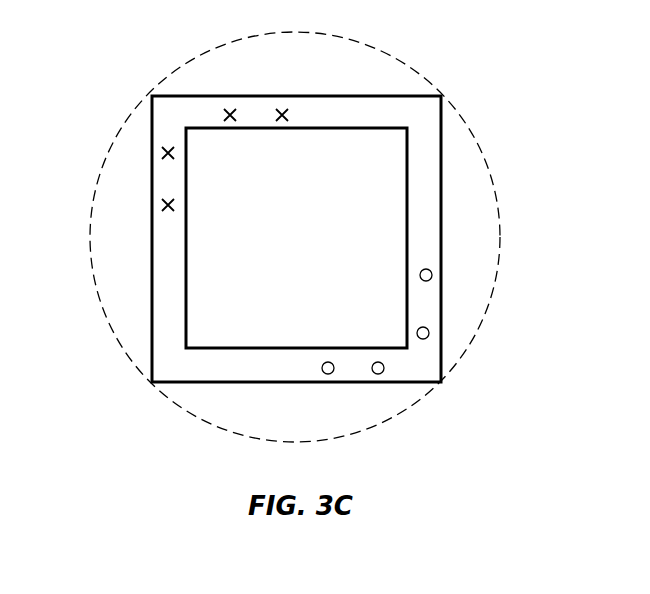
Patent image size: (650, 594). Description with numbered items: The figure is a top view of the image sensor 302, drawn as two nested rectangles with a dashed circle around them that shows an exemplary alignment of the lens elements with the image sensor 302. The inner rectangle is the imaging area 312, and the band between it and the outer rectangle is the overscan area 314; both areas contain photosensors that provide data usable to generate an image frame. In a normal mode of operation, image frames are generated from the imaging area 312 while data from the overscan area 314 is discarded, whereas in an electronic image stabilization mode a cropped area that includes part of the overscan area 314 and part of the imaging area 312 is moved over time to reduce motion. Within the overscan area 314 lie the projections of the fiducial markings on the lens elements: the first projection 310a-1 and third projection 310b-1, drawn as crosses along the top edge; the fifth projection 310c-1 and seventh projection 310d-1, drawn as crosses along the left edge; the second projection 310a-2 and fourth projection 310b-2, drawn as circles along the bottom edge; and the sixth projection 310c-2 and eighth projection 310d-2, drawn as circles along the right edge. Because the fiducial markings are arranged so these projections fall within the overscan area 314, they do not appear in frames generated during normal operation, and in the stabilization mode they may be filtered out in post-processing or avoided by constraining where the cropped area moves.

The image sensor 302 is at (442, 152).
The imaging area 312 is at (432, 117).
The overscan area 314 is at (395, 212).
The first projection 310a-1 is at (284, 107).
The third projection 310b-1 is at (229, 107).
The fifth projection 310c-1 is at (162, 153).
The seventh projection 310d-1 is at (162, 205).
The second projection 310a-2 is at (328, 374).
The fourth projection 310b-2 is at (378, 374).
The sixth projection 310c-2 is at (429, 331).
The eighth projection 310d-2 is at (432, 274).